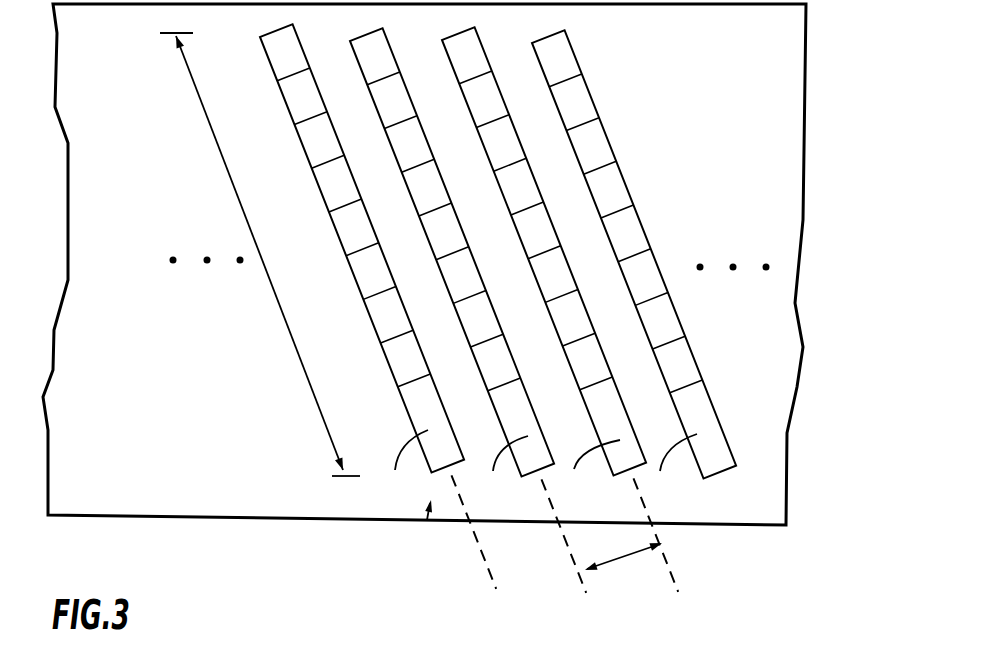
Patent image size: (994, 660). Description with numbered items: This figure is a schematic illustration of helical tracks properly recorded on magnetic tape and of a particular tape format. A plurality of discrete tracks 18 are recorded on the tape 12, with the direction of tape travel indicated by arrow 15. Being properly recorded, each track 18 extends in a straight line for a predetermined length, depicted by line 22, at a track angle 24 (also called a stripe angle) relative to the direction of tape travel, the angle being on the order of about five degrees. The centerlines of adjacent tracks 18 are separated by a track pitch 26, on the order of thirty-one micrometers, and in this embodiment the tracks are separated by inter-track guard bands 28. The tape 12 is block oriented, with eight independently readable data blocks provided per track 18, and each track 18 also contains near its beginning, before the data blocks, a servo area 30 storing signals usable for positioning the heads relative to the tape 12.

The tape 12 is at (153, 518).
The arrow indicating direction of tape travel 15 is at (878, 167).
The tracks 18 is at (552, 33).
The line depicting predetermined track length 22 is at (309, 382).
The track angle 24 is at (450, 482).
The track pitch 26 is at (633, 553).
The inter-track guard bands 28 is at (597, 291).
The servo area 30 is at (713, 393).